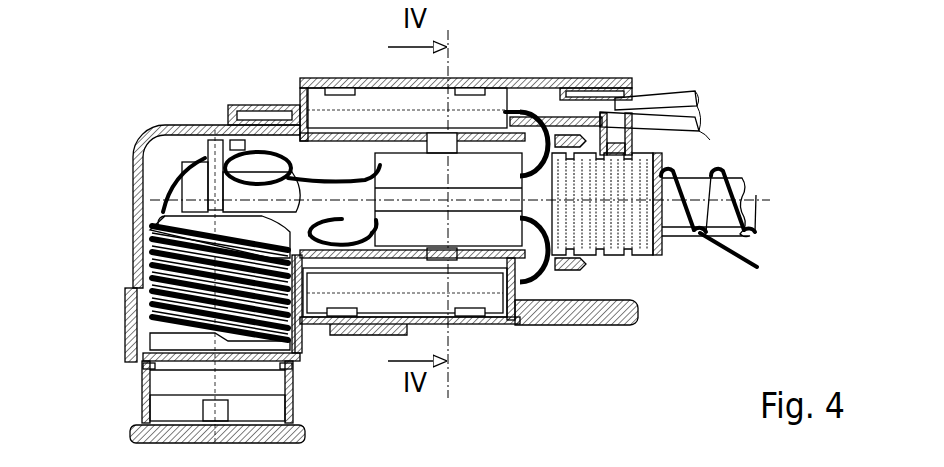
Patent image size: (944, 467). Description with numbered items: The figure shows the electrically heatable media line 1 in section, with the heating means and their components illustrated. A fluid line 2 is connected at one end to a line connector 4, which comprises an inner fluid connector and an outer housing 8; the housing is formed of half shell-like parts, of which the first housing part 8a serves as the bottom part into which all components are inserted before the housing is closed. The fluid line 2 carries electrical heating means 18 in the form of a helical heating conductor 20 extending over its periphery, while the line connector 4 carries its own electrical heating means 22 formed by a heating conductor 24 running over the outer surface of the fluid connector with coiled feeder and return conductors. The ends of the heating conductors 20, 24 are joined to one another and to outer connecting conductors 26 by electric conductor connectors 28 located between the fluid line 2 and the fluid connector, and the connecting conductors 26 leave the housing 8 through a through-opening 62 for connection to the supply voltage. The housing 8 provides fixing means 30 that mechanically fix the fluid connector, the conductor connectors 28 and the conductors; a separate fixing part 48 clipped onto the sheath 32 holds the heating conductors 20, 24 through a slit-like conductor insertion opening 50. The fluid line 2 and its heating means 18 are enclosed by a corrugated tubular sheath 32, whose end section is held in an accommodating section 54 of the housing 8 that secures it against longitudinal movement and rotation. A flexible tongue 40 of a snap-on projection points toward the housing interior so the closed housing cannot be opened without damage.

The electrically heatable media line 1 is at (700, 283).
The fluid line 2 is at (713, 208).
The line connector 4 is at (255, 88).
The housing 8 is at (177, 113).
The first housing part 8a is at (153, 162).
The electrical heating means 18 is at (742, 167).
The heating conductor 20 is at (338, 228).
The electrical heating means 22 is at (150, 248).
The heating conductor 24 is at (316, 177).
The connecting conductors 26 is at (677, 116).
The conductor connectors 28 is at (369, 106).
The fixing means 30 is at (476, 178).
The sheath 32 is at (666, 160).
The flexible tongue 40 is at (505, 463).
The fixing part 48 is at (495, 234).
The conductor insertion opening 50 is at (440, 203).
The accommodating section 54 is at (622, 150).
The through-opening 62 is at (632, 91).